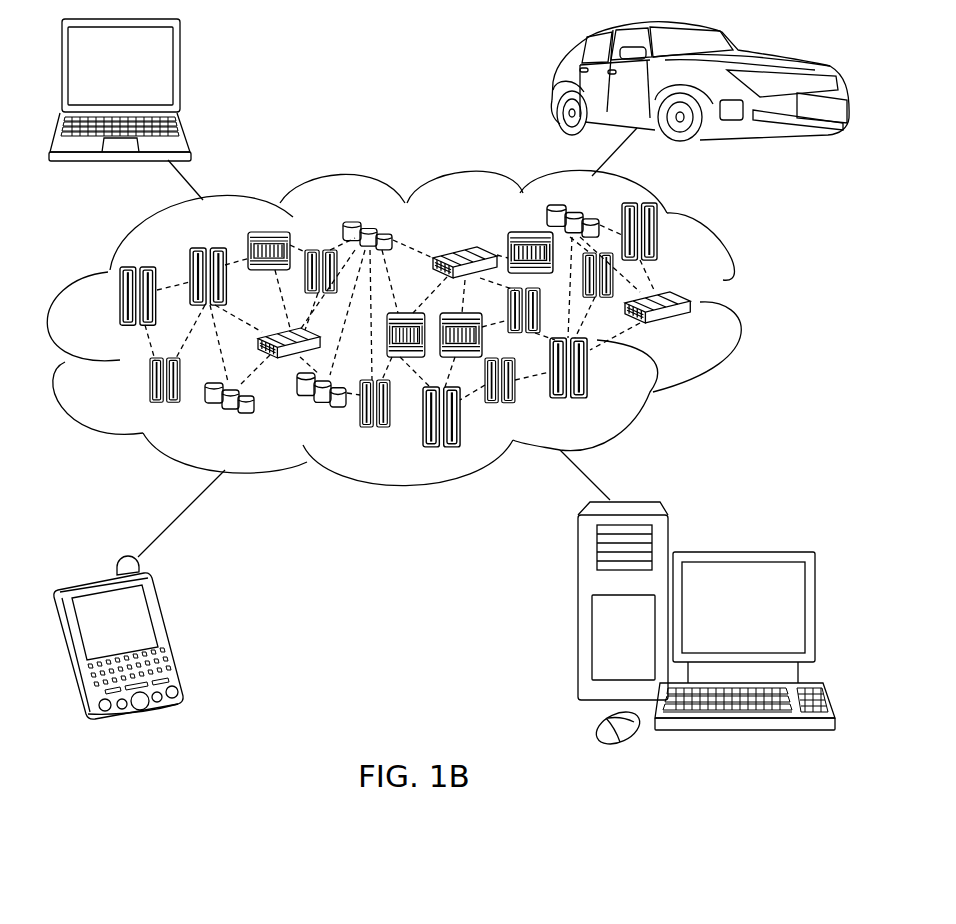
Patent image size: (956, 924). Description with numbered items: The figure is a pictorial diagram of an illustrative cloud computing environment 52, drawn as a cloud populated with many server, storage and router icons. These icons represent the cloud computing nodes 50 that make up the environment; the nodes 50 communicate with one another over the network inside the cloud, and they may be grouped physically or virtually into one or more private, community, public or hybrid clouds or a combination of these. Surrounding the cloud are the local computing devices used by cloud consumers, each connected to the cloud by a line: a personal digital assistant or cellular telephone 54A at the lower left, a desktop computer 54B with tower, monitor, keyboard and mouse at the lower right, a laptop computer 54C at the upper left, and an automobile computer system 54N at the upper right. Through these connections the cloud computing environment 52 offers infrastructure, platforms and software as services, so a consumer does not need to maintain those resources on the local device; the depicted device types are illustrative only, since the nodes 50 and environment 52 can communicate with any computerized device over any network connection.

The cloud computing nodes 50 is at (740, 228).
The cloud computing environment 52 is at (746, 303).
The personal digital assistant (PDA) or cellular telephone 54A is at (175, 636).
The desktop computer 54B is at (740, 552).
The laptop computer 54C is at (180, 72).
The automobile computer system 54N is at (555, 88).